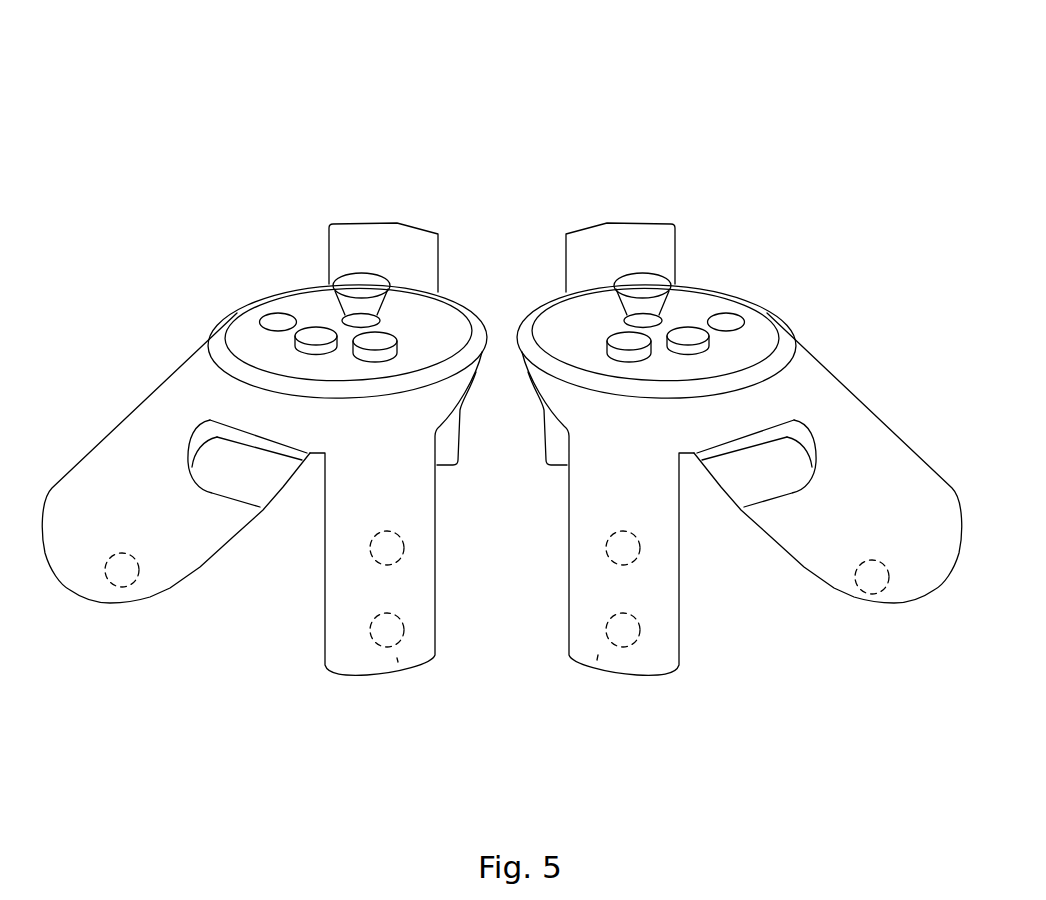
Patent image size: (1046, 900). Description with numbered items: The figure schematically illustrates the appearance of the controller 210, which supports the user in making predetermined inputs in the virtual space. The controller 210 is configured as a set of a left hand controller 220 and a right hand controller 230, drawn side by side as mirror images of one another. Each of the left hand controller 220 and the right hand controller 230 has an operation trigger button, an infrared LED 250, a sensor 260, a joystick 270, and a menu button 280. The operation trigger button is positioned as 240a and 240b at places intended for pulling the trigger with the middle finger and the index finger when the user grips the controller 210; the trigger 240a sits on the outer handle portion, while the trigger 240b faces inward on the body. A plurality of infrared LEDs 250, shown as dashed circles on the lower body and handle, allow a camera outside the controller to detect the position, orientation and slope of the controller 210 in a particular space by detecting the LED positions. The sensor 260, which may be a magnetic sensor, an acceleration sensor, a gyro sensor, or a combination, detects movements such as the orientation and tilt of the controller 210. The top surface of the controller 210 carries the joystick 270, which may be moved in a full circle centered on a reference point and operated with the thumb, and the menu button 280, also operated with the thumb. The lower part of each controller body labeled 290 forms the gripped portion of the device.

The controller 210 is at (517, 44).
The left hand controller 220 is at (347, 187).
The right hand controller 230 is at (658, 170).
The operation trigger button 240a is at (227, 462).
The operation trigger button 240b is at (554, 450).
The infrared LED 250 is at (612, 545).
The sensor 260 is at (127, 580).
The joystick 270 is at (355, 283).
The menu button 280 is at (314, 333).
The handle portion 290 is at (597, 660).